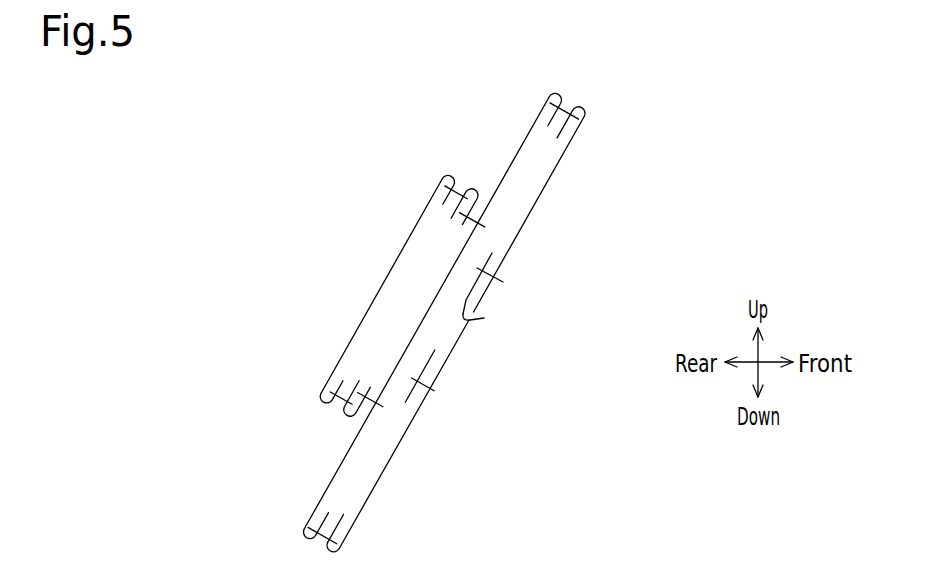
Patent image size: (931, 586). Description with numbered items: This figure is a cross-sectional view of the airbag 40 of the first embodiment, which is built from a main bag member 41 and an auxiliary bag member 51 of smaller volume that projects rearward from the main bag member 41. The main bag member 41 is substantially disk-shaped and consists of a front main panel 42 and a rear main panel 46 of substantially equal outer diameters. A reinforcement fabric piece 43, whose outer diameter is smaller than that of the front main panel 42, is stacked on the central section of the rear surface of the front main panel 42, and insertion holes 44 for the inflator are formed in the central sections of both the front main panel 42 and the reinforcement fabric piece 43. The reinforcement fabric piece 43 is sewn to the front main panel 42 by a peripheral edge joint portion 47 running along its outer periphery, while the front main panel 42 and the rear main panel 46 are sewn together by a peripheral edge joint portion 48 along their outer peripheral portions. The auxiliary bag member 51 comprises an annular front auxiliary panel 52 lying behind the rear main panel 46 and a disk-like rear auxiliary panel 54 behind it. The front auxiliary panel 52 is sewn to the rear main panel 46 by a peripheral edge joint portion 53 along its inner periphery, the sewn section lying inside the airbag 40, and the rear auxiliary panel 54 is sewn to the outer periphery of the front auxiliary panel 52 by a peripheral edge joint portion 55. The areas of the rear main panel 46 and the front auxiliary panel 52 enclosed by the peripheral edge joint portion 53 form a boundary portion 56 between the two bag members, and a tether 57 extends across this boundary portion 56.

The airbag 40 is at (370, 180).
The main bag member 41 is at (609, 48).
The front main panel 42 is at (585, 120).
The reinforcement fabric piece 43 is at (446, 364).
The insertion holes 44 is at (484, 318).
The rear main panel 46 is at (549, 99).
The peripheral edge joint portion 47 is at (500, 280).
The peripheral edge joint portion 48 is at (560, 127).
The auxiliary bag member 51 is at (268, 373).
The front auxiliary panel 52 is at (349, 416).
The peripheral edge joint portion 53 is at (475, 225).
The rear auxiliary panel 54 is at (331, 392).
The peripheral edge joint portion 55 is at (462, 191).
The boundary portion 56 is at (431, 313).
The tether 57 is at (432, 312).